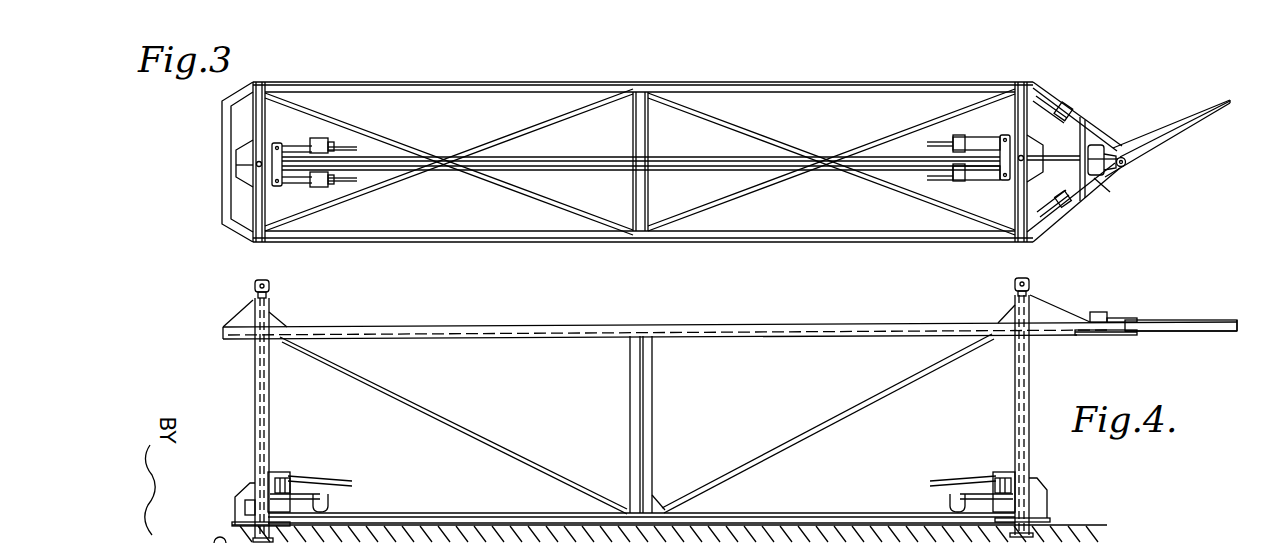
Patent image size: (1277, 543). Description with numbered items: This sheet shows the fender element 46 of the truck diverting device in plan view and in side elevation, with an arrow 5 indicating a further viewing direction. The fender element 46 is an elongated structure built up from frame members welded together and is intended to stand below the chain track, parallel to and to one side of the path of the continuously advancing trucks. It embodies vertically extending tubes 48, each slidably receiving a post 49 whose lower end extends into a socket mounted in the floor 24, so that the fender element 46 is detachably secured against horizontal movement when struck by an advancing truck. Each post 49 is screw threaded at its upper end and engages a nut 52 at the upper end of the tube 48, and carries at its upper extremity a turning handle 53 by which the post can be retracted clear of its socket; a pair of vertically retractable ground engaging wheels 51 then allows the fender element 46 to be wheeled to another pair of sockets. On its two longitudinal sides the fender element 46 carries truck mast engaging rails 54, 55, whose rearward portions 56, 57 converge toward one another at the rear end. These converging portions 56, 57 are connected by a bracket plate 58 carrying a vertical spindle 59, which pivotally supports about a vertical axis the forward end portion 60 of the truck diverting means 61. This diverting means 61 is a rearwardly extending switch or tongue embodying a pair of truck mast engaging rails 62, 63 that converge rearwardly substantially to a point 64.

In FIG. 4, the section view direction 5 is at (205, 333).
In FIG. 4, the floor 24 is at (1103, 526).
In FIG. 3, the fender element 46 is at (510, 81).
In FIG. 4, the fender element 46 is at (553, 326).
In FIG. 4, the vertically extending tube 48 is at (255, 430).
In FIG. 4, the post 49 is at (268, 376).
In FIG. 3, the vertically retractable ground engaging wheel 51 is at (318, 185).
In FIG. 4, the vertically retractable ground engaging wheel 51 is at (330, 503).
In FIG. 4, the nut 52 is at (1029, 294).
In FIG. 3, the turning handle 53 is at (256, 165).
In FIG. 4, the turning handle 53 is at (268, 283).
In FIG. 3, the truck mast engaging rail 54 is at (806, 238).
In FIG. 4, the truck mast engaging rail 54 is at (740, 334).
In FIG. 3, the truck mast engaging rail 55 is at (759, 82).
In FIG. 3, the rearward portion 56 is at (1108, 190).
In FIG. 4, the rearward portion 56 is at (1100, 335).
In FIG. 3, the rearward portion 57 is at (1090, 143).
In FIG. 3, the bracket plate 58 is at (1092, 140).
In FIG. 4, the bracket plate 58 is at (1127, 335).
In FIG. 3, the vertical spindle 59 is at (1127, 170).
In FIG. 4, the vertical spindle 59 is at (1110, 318).
In FIG. 3, the forward end portion 60 is at (1130, 158).
In FIG. 4, the forward end portion 60 is at (1097, 312).
In FIG. 3, the truck diverting means 61 is at (1147, 145).
In FIG. 4, the truck diverting means 61 is at (1190, 322).
In FIG. 3, the truck mast engaging rail 62 is at (1190, 133).
In FIG. 4, the truck mast engaging rail 62 is at (1200, 330).
In FIG. 3, the truck mast engaging rail 63 is at (1187, 118).
In FIG. 3, the point 64 is at (1230, 102).
In FIG. 4, the point 64 is at (1237, 325).